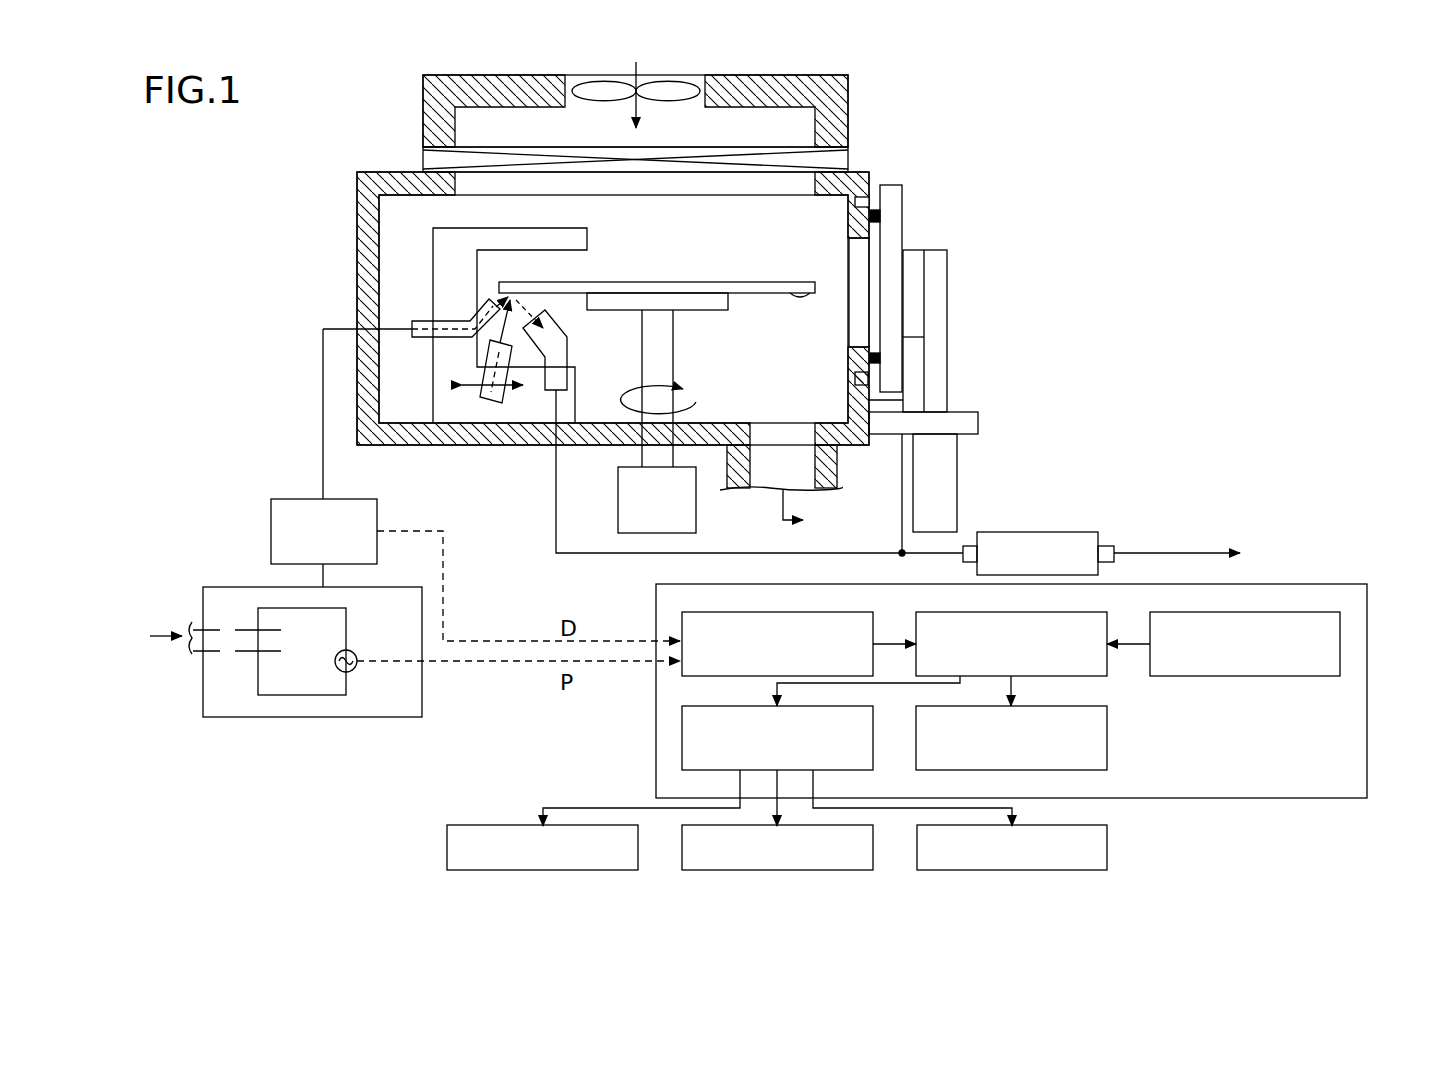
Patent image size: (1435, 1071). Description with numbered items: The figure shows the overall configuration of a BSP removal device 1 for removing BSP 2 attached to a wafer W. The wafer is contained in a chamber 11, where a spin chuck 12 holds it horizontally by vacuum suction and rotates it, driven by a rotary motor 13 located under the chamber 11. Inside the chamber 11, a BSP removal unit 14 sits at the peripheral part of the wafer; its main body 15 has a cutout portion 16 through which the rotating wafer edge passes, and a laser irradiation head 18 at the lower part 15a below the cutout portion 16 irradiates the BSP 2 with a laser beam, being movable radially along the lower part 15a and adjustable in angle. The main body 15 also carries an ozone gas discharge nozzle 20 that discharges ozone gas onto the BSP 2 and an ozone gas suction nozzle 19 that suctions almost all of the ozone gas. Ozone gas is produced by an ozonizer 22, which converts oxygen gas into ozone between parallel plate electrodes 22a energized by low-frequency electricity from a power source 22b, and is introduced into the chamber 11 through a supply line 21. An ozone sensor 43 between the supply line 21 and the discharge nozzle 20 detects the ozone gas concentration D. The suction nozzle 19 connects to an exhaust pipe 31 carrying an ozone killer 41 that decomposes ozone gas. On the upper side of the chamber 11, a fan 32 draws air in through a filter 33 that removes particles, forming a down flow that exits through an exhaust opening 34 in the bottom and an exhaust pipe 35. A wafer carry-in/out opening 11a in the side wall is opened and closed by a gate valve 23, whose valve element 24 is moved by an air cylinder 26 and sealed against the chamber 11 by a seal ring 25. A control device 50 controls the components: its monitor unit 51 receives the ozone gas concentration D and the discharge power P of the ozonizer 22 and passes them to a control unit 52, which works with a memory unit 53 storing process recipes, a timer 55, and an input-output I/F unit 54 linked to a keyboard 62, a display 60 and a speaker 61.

The BSP removal device 1 is at (907, 104).
The BSP 2 is at (802, 298).
The chamber 11 is at (866, 178).
The wafer carry-in/out opening 11a is at (848, 258).
The spin chuck 12 is at (686, 310).
The rotary motor 13 is at (618, 496).
The BSP removal unit 14 is at (585, 215).
The main body 15 is at (487, 227).
The lower part 15a is at (455, 392).
The cutout portion 16 is at (577, 264).
The laser irradiation head 18 is at (493, 410).
The ozone gas suction nozzle 19 is at (568, 362).
The ozone gas discharge nozzle 20 is at (420, 321).
The supply line 21 is at (323, 467).
The ozonizer 22 is at (265, 586).
The parallel plate electrodes 22a is at (267, 652).
The power supply 22b is at (350, 672).
The gate valve 23 is at (990, 250).
The valve element 24 is at (903, 194).
The seal ring 25 is at (903, 228).
The air cylinder 26 is at (957, 486).
The exhaust pipe 31 is at (556, 492).
The fan 32 is at (666, 98).
The filter 33 is at (795, 145).
The exhaust opening 34 is at (782, 434).
The exhaust pipe 35 is at (782, 507).
The ozone killer 41 is at (1040, 532).
The ozone sensor 43 is at (377, 505).
The control device 50 is at (1367, 692).
The monitor unit 51 is at (788, 612).
The control unit 52 is at (1018, 612).
The memory unit 53 is at (990, 771).
The input-output I/F unit 54 is at (826, 771).
The timer 55 is at (1248, 612).
The display 60 is at (778, 871).
The speaker 61 is at (1010, 871).
The keyboard 62 is at (546, 871).